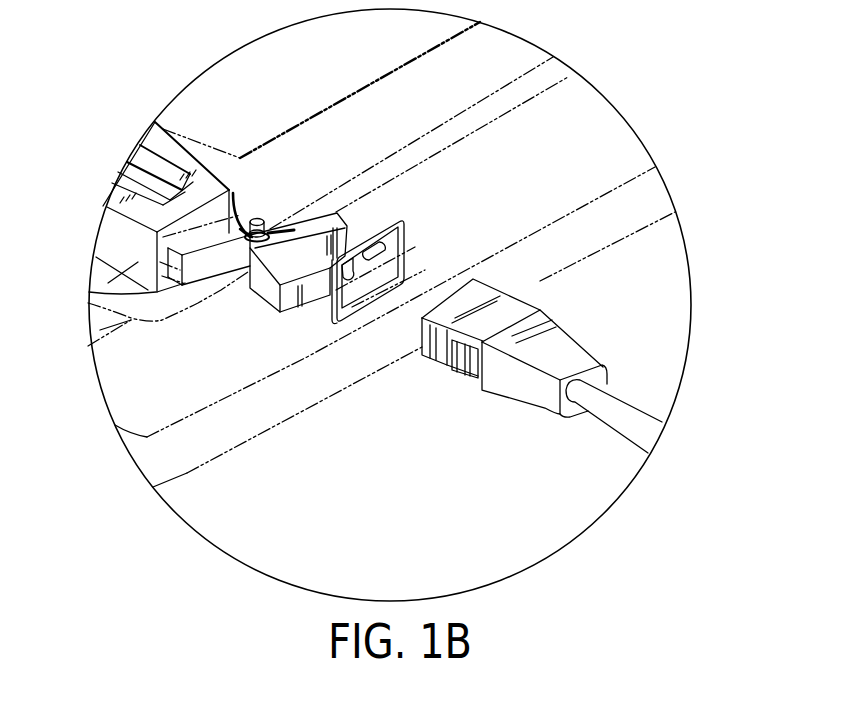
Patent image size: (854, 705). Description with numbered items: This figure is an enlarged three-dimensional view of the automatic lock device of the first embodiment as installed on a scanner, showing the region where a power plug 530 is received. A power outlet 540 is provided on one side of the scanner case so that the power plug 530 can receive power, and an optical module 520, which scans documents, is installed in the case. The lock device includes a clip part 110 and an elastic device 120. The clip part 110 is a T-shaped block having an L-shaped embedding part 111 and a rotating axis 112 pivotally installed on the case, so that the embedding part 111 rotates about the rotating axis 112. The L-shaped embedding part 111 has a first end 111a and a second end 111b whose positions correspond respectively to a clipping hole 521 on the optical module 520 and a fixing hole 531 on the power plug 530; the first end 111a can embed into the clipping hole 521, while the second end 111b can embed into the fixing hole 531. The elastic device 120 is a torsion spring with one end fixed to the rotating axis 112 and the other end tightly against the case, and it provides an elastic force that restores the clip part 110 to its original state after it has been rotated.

The clip part 110 is at (362, 210).
The embedding part 111 is at (278, 370).
The first end 111a is at (203, 265).
The second end 111b is at (303, 303).
The rotating axis 112 is at (266, 218).
The elastic device 120 is at (240, 222).
The optical module 520 is at (138, 262).
The clipping hole 521 is at (108, 334).
The power plug 530 is at (542, 366).
The fixing hole 531 is at (468, 360).
The power outlet 540 is at (392, 252).